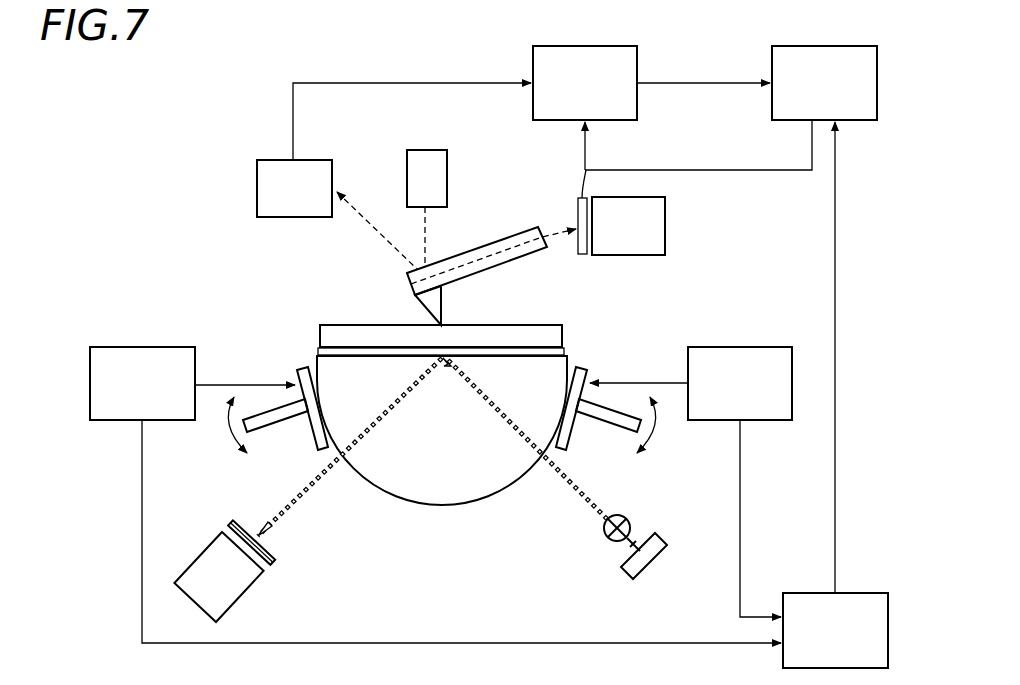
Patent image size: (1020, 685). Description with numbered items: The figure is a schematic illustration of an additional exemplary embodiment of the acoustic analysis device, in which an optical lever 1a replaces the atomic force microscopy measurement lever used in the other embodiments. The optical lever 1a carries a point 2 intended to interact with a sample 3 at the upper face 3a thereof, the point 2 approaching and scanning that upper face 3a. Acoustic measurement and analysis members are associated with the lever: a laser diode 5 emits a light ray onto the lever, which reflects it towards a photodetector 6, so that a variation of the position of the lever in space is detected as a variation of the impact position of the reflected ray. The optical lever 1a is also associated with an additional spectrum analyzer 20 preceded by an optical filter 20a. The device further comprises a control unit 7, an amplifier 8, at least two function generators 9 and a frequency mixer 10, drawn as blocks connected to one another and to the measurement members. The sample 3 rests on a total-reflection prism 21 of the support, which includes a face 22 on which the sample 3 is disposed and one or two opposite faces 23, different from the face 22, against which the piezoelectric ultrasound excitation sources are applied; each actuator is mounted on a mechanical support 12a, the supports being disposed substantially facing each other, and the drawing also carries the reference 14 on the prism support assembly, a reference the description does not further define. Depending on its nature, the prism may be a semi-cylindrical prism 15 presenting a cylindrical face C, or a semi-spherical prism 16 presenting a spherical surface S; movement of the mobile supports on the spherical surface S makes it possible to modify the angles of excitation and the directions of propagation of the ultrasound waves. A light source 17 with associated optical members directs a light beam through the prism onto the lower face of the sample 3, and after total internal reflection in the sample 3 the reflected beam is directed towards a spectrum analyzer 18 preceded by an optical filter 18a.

The optical lever 1a is at (501, 227).
The point 2 is at (443, 297).
The sample 3 is at (541, 313).
The upper face 3a is at (333, 325).
The laser diode 5 is at (435, 194).
The photodetector 6 is at (302, 203).
The control unit 7 is at (593, 98).
The amplifier 8 is at (832, 98).
The function generators 9 is at (150, 399).
The frequency mixer 10 is at (851, 646).
The mechanical support 12a is at (280, 430).
The chamber housing 14 is at (476, 429).
The semi-cylindrical prism 15 is at (442, 430).
The semi-spherical prism 16 is at (442, 430).
The light source 17 is at (662, 572).
The spectrum analyzer 18 is at (235, 595).
The optical filter 18a is at (230, 524).
The additional spectrum analyzer 20 is at (645, 242).
The optical filter 20a is at (587, 170).
The total-reflection prism 21 is at (510, 465).
The face 22 is at (407, 432).
The opposite faces 23 is at (442, 480).
The cylindrical face C is at (442, 480).
The spherical surface S is at (442, 480).